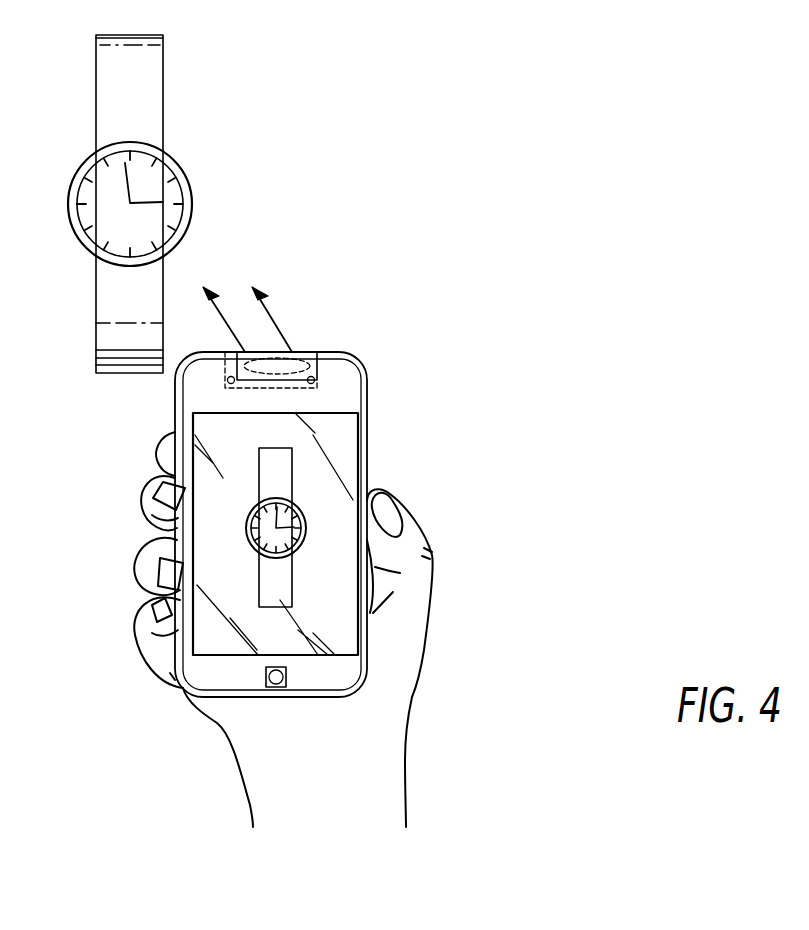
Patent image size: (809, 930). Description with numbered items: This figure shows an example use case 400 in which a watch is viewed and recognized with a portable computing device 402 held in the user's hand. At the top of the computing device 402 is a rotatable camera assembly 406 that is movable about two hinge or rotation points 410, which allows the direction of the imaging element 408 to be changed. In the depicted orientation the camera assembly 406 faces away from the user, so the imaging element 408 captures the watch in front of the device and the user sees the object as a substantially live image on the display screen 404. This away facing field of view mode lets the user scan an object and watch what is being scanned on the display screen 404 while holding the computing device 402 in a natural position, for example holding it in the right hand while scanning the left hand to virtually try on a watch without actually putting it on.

The example use case 400 is at (567, 218).
The portable computing device 402 is at (342, 668).
The display screen 404 is at (345, 430).
The rotatable camera assembly 406 is at (301, 288).
The imaging element 408 is at (297, 362).
The hinge or rotation points 410 is at (228, 380).